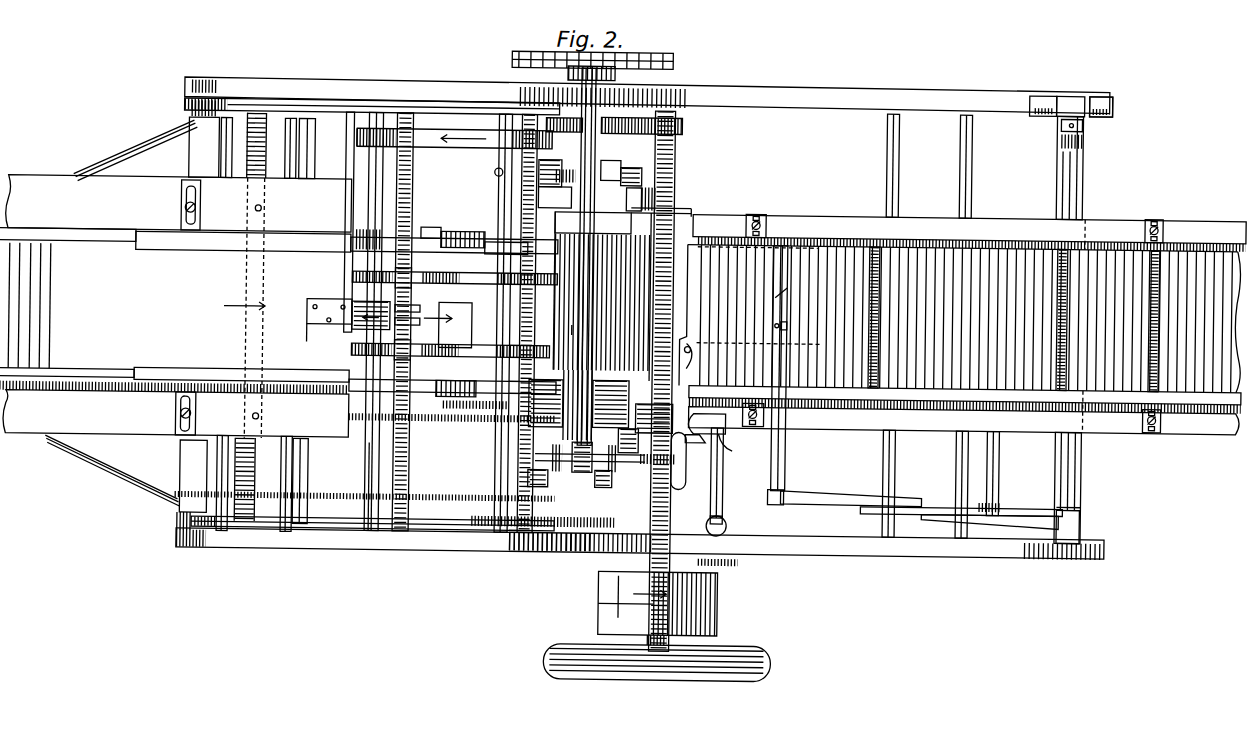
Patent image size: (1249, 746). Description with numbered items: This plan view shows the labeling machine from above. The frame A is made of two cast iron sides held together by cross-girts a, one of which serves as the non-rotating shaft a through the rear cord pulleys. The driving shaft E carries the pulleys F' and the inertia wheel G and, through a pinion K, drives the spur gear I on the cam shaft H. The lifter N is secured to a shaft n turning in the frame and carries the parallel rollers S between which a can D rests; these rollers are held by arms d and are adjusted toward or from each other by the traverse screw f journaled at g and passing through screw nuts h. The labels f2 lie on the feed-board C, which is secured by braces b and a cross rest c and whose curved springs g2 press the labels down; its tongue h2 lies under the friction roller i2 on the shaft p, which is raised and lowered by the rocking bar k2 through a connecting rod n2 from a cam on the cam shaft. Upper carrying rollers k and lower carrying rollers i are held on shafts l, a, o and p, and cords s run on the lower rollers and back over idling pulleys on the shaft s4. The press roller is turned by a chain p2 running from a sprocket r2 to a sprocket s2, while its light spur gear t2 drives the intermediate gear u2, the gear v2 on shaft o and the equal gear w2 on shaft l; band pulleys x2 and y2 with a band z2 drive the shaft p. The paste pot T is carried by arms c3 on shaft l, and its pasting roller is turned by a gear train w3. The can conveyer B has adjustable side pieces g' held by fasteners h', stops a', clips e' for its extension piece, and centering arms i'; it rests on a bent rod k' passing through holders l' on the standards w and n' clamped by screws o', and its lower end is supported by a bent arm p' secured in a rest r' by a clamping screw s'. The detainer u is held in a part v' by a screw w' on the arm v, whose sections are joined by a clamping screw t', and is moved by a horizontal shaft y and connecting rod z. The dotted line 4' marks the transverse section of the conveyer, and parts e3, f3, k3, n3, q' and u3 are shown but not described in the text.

The frame A is at (643, 318).
The conveyer B is at (963, 421).
The feed-board C is at (177, 306).
The can D is at (630, 284).
The driving shaft E is at (677, 178).
The pulley F' is at (658, 606).
The inertia wheel G is at (656, 663).
The pinion K is at (684, 125).
The spur gear I is at (610, 158).
The lifter N is at (648, 435).
The cam shaft H is at (577, 325).
The carrying roller S is at (578, 404).
The paste pot T is at (433, 226).
The cross-girt a is at (596, 322).
The stop a' is at (685, 340).
The brace b is at (125, 154).
The cross rest c is at (258, 145).
The arm c3 is at (460, 228).
The arm d is at (560, 158).
The clip e' is at (669, 322).
The shifting bar e3 is at (400, 310).
The traverse screw f is at (684, 460).
The label f2 is at (137, 307).
The shaft f3 is at (414, 190).
The journal g is at (583, 464).
The side piece g' is at (967, 312).
The spring g2 is at (176, 250).
The screw nut h is at (590, 442).
The fastener h' is at (962, 323).
The tongue h2 is at (329, 312).
The carrying roller i is at (445, 309).
The centering arm i' is at (691, 334).
The friction roller i2 is at (355, 305).
The carrying roller k is at (448, 314).
The rod k' is at (1072, 330).
The rocking bar k2 is at (193, 476).
The adjusting box k3 is at (225, 230).
The shaft l is at (505, 323).
The holder l' is at (1097, 115).
The shaft n is at (1058, 168).
The standard n' is at (1072, 97).
The connecting rod n2 is at (445, 493).
The rack bar n3 is at (425, 418).
The shaft o is at (506, 186).
The clamping screw o' is at (1054, 325).
The shaft p is at (351, 486).
The bent arm p' is at (726, 473).
The chain p2 is at (673, 54).
The plate q' is at (315, 333).
The rest r' is at (724, 524).
The sprocket r2 is at (568, 68).
The cord s is at (431, 301).
The clamping screw s' is at (753, 458).
The sprocket s2 is at (598, 70).
The shaft s4 is at (298, 170).
The clamping screw t' is at (961, 502).
The spur gear t2 is at (620, 517).
The detainer u is at (760, 361).
The intermediate gear u2 is at (560, 540).
The collar u3 is at (500, 405).
The arm v is at (850, 493).
The holding part v' is at (784, 375).
The gear v2 is at (530, 540).
The standard w is at (1063, 567).
The clamping screw w' is at (799, 323).
The gear w2 is at (495, 540).
The train of gears w3 is at (455, 269).
The band pulley x2 is at (515, 132).
The horizontal shaft y is at (1000, 462).
The band pulley y2 is at (362, 144).
The connecting rod z is at (1004, 497).
The band z2 is at (430, 134).
The section line 4' is at (1082, 326).